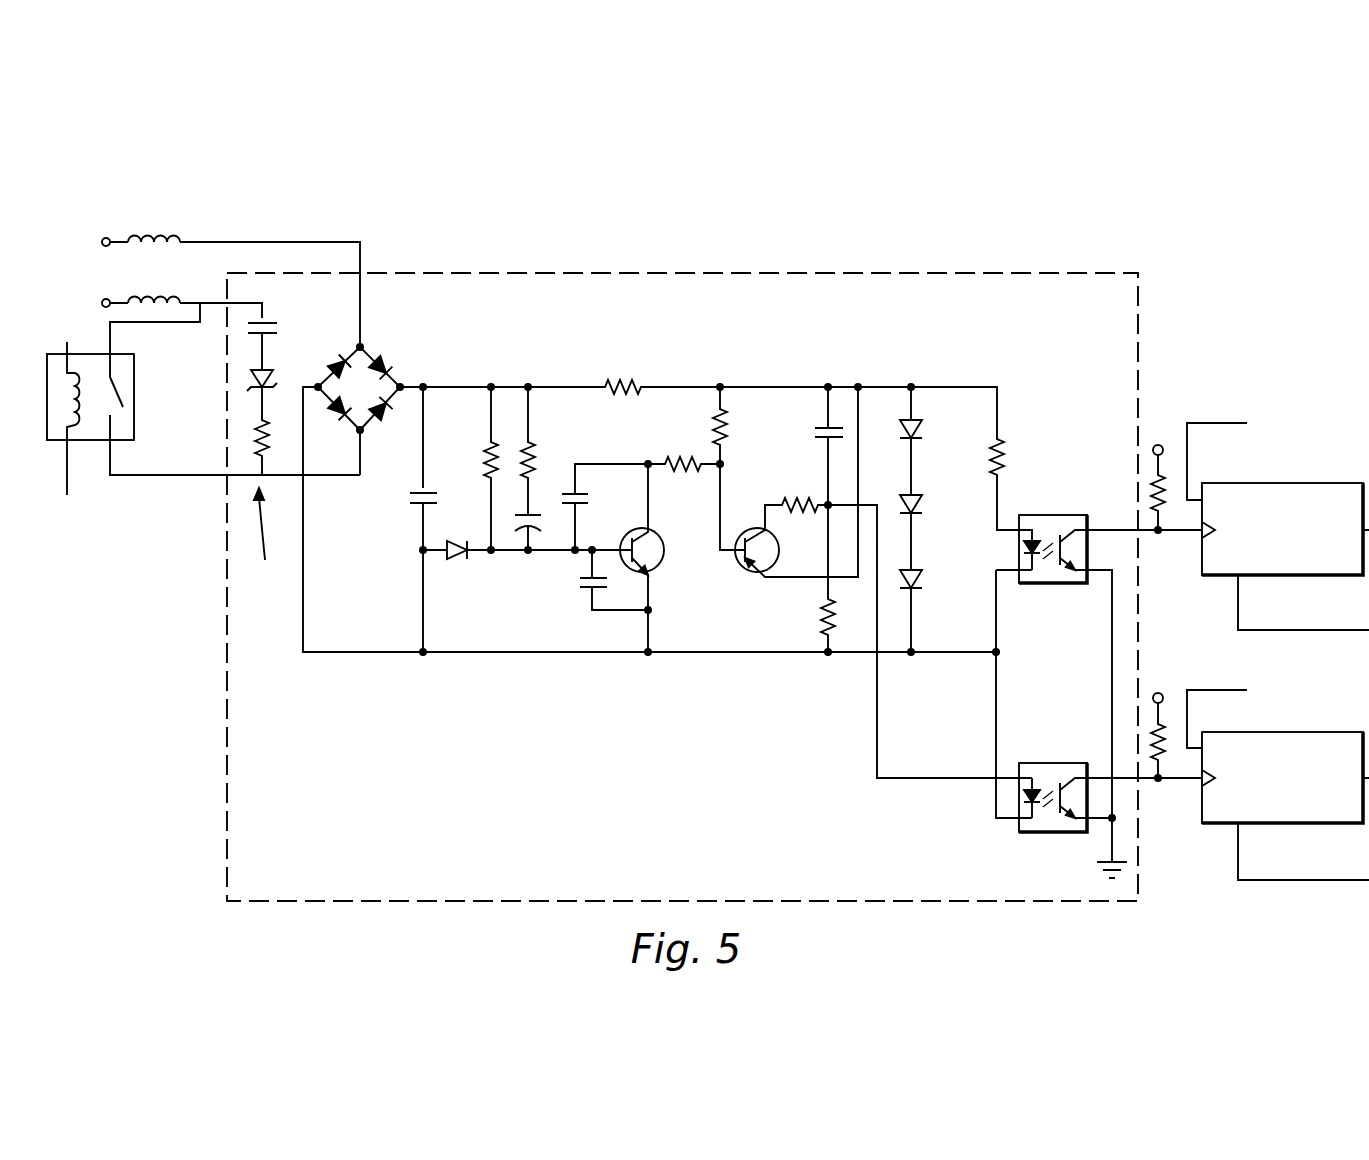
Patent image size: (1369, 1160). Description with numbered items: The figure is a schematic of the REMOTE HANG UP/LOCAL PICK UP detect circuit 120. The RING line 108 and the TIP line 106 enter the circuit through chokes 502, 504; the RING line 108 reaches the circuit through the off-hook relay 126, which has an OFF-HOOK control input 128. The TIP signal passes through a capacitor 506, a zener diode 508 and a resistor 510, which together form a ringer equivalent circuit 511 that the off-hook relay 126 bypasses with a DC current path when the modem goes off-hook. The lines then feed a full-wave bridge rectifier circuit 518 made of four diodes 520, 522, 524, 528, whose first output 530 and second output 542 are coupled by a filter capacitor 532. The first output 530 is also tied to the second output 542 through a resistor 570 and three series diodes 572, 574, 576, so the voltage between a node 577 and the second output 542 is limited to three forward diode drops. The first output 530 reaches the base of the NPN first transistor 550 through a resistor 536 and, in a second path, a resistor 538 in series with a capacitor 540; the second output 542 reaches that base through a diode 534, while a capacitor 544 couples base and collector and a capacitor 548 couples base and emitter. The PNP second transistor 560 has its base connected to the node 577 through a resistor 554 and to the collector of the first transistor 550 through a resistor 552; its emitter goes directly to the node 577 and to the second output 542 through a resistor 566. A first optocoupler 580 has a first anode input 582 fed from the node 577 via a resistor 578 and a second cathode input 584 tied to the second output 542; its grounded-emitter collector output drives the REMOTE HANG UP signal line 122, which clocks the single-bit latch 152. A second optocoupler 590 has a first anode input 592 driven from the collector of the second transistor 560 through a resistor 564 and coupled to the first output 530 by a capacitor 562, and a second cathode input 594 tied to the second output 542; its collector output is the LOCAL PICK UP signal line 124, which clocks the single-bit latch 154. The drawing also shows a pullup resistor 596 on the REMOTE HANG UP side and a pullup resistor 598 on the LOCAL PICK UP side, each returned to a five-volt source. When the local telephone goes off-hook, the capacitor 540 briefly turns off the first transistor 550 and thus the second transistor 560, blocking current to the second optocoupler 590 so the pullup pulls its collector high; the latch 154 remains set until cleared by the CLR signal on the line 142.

The TIP line 106 is at (120, 297).
The RING line 108 is at (120, 236).
The REMOTE HANG UP/LOCAL PICK UP detect circuit 120 is at (1023, 273).
The REMOTE HANG UP signal line 122 is at (1180, 532).
The LOCAL PICK UP signal line 124 is at (1180, 780).
The off-hook relay 126 is at (43, 414).
The OFF-HOOK control input 128 is at (92, 562).
The CLR signal line 142 is at (1267, 632).
The single-bit latch 152 is at (1280, 483).
The single-bit latch 154 is at (1280, 732).
The choke 502 is at (180, 228).
The choke 504 is at (180, 292).
The capacitor 506 is at (245, 326).
The zener diode 508 is at (248, 381).
The resistor 510 is at (253, 436).
The ringer equivalent circuit 511 is at (263, 540).
The full-wave bridge rectifier circuit 518 is at (381, 385).
The diode 520 is at (333, 364).
The diode 522 is at (388, 372).
The diode 524 is at (338, 415).
The diode 528 is at (385, 415).
The first output 530 is at (458, 386).
The filter capacitor 532 is at (415, 496).
The diode 534 is at (466, 560).
The resistor 536 is at (487, 458).
The resistor 538 is at (533, 453).
The capacitor 540 is at (542, 526).
The second output 542 is at (507, 654).
The capacitor 544 is at (590, 491).
The capacitor 548 is at (580, 584).
The first transistor 550 is at (658, 535).
The resistor 552 is at (672, 455).
The resistor 554 is at (727, 420).
The second transistor 560 is at (737, 558).
The capacitor 562 is at (818, 440).
The resistor 564 is at (793, 503).
The resistor 566 is at (823, 610).
The resistor 570 is at (618, 382).
The diode 572 is at (920, 428).
The diode 574 is at (920, 503).
The diode 576 is at (920, 580).
The node 577 is at (770, 383).
The resistor 578 is at (1002, 457).
The first optocoupler 580 is at (1055, 541).
The first anode input 582 is at (1005, 530).
The second cathode input 584 is at (1007, 572).
The second optocoupler 590 is at (1024, 778).
The first anode input 592 is at (1010, 777).
The second cathode input 594 is at (1007, 820).
The pullup resistor 596 is at (1150, 480).
The pull-up resistor 598 is at (1162, 725).